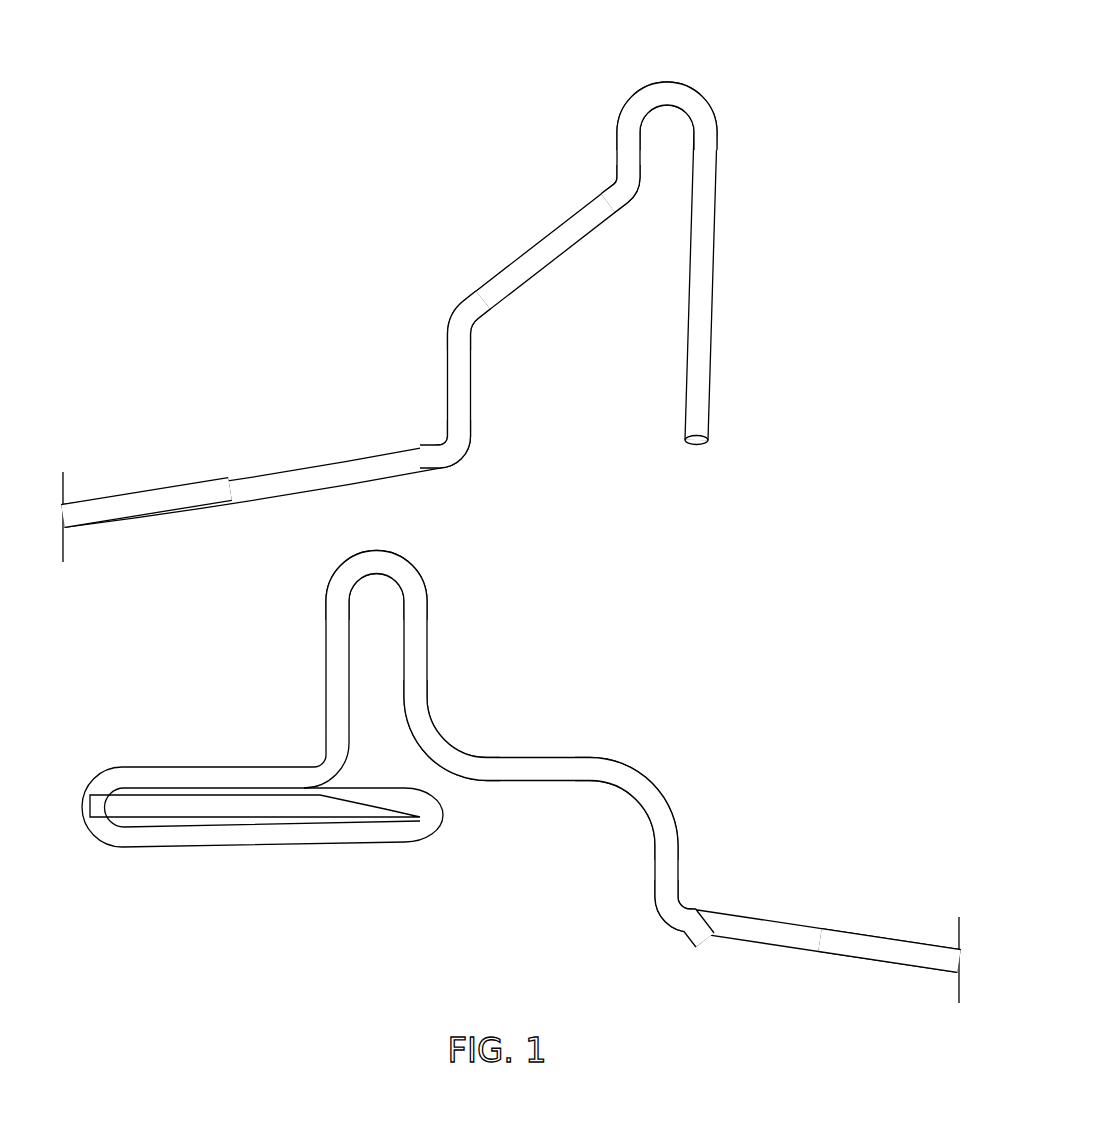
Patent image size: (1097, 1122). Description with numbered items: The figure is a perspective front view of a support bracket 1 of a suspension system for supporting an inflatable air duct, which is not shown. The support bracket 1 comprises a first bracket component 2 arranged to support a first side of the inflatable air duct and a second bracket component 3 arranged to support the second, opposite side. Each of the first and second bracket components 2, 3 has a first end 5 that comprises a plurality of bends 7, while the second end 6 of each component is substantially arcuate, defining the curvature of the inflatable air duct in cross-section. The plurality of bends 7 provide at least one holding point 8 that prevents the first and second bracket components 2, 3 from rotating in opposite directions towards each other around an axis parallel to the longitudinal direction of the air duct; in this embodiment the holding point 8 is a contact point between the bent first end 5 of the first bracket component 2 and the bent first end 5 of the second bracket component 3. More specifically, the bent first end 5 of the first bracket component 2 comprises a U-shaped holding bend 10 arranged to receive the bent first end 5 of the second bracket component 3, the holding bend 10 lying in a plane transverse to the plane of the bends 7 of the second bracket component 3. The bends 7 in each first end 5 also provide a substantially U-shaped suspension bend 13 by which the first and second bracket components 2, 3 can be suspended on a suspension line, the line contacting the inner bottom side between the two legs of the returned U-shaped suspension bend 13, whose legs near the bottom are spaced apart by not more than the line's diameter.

The support bracket 1 is at (500, 512).
The first bracket component 2 is at (520, 782).
The second bracket component 3 is at (284, 390).
The first end 5 is at (500, 512).
The second end 6 is at (126, 496).
The bends 7 is at (700, 93).
The holding point 8 is at (418, 818).
The U-shaped holding bend 10 is at (262, 845).
The suspension bend 13 is at (650, 83).